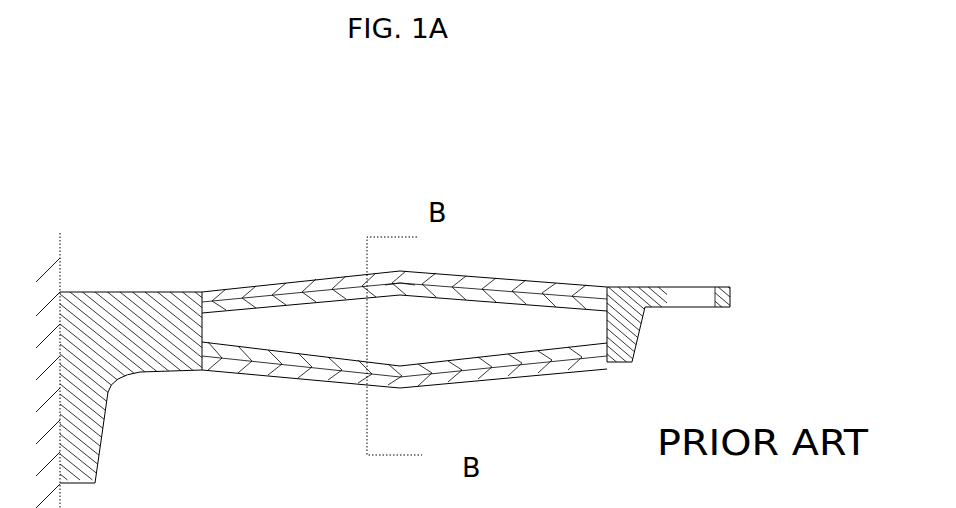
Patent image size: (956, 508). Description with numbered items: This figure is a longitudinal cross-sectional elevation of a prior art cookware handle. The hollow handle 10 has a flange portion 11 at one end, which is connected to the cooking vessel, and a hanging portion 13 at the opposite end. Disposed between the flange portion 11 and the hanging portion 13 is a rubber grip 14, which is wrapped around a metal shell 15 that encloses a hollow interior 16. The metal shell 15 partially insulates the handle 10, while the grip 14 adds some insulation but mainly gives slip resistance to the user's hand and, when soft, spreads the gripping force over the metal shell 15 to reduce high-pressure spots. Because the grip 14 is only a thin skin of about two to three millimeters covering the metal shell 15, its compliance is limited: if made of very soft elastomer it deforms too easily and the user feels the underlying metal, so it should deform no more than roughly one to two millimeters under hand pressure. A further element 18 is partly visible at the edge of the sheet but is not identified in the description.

The prior art composite wing structure 10 is at (502, 132).
The root fitting / rib attachment block 11 is at (132, 291).
The outboard spar flange fitting 13 is at (686, 284).
The composite skin panels 14 is at (314, 272).
The ply junction at skin apex 15 is at (405, 282).
The internal cavity between skins 16 is at (466, 350).
The lower component (cut off at sheet edge) 18 is at (630, 504).